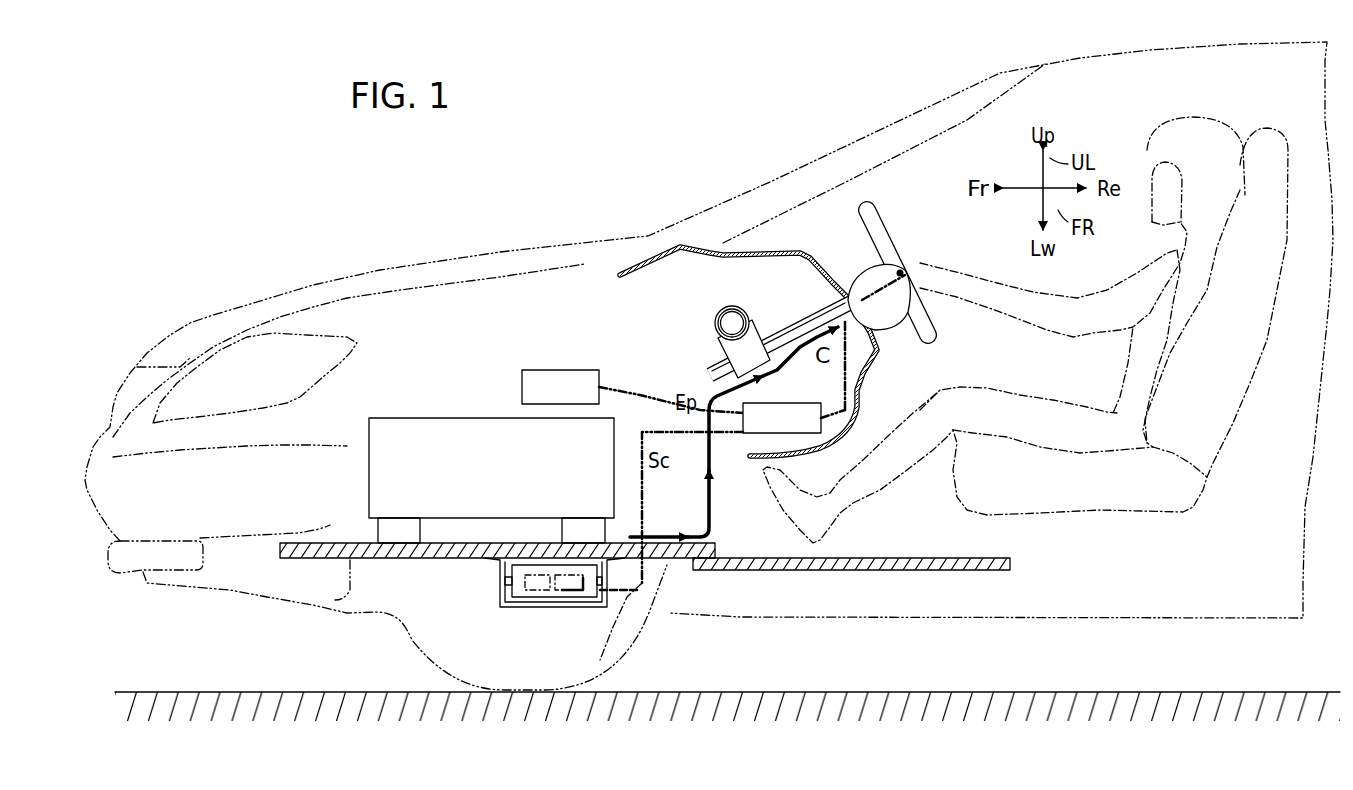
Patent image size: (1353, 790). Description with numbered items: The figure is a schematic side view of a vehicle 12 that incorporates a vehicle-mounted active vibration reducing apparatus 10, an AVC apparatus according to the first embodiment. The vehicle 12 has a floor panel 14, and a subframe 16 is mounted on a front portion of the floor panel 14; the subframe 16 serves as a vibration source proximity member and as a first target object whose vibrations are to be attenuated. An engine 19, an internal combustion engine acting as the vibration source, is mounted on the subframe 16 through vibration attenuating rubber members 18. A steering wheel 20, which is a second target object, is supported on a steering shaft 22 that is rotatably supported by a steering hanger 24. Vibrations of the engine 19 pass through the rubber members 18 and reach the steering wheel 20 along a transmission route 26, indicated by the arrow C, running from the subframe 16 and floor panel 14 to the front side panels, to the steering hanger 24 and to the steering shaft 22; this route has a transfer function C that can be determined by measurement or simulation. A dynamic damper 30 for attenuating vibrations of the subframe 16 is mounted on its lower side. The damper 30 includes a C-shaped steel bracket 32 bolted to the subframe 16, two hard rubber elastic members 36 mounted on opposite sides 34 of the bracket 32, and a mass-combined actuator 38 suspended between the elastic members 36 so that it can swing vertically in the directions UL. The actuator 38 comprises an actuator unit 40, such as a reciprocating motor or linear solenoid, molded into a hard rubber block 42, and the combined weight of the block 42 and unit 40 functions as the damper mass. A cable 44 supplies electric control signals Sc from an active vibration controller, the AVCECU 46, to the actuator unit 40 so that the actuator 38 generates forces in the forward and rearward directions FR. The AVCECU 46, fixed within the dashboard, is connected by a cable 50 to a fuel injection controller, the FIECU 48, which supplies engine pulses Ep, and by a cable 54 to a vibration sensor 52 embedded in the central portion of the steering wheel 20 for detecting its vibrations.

The vehicle-mounted active vibration reducing apparatus 10 is at (528, 352).
The vehicle 12 is at (798, 166).
The floor panel 14 is at (875, 572).
The subframe 16 is at (404, 557).
The vibration attenuating rubber members 18 is at (397, 525).
The engine 19 is at (428, 417).
The steering wheel 20 is at (873, 212).
The steering shaft 22 is at (802, 332).
The steering hanger 24 is at (714, 330).
The transmission route 26 is at (707, 506).
The dynamic damper 30 is at (540, 621).
The bracket 32 is at (500, 601).
The opposite sides of the bracket 34 is at (507, 590).
The elastic members 36 is at (508, 578).
The mass-combined actuator 38 is at (539, 629).
The actuator unit 40 is at (537, 601).
The hard rubber block 42 is at (524, 599).
The cable 44 is at (671, 546).
The active vibration controller (AVCECU) 46 is at (802, 402).
The fuel injection controller (FIECU) 48 is at (576, 369).
The cable 50 is at (633, 392).
The vibration sensor 52 is at (903, 272).
The cable 54 is at (868, 372).